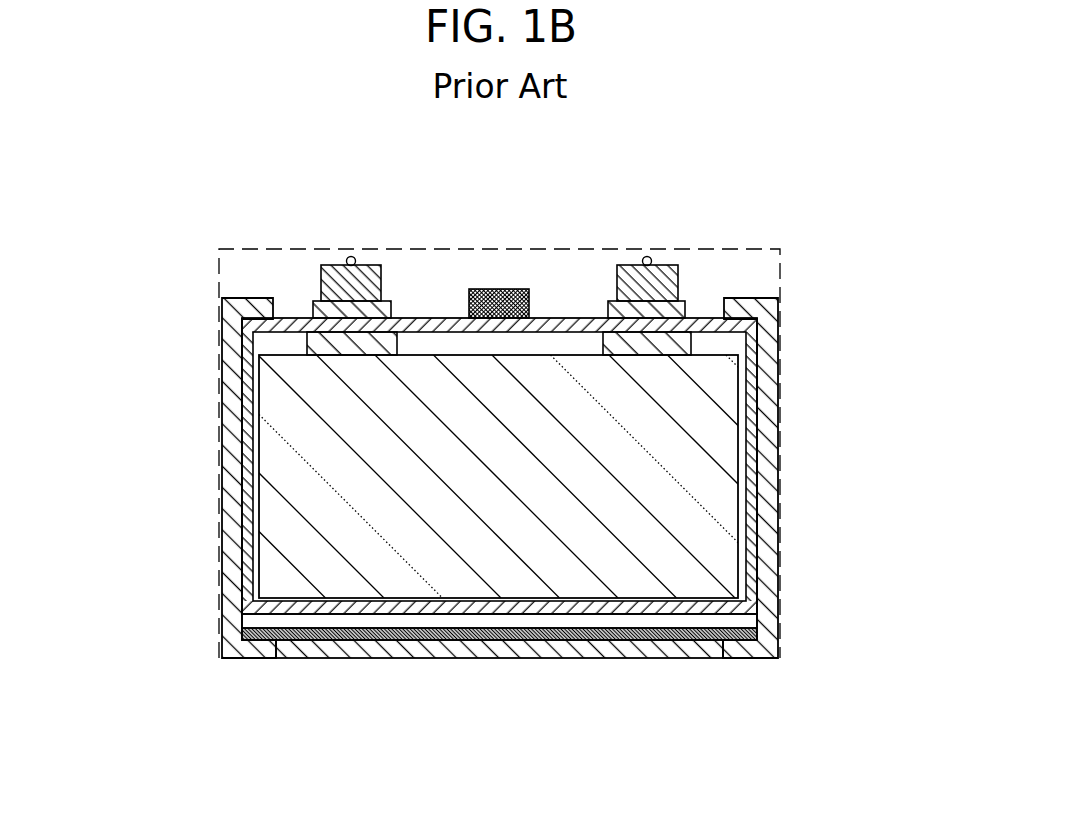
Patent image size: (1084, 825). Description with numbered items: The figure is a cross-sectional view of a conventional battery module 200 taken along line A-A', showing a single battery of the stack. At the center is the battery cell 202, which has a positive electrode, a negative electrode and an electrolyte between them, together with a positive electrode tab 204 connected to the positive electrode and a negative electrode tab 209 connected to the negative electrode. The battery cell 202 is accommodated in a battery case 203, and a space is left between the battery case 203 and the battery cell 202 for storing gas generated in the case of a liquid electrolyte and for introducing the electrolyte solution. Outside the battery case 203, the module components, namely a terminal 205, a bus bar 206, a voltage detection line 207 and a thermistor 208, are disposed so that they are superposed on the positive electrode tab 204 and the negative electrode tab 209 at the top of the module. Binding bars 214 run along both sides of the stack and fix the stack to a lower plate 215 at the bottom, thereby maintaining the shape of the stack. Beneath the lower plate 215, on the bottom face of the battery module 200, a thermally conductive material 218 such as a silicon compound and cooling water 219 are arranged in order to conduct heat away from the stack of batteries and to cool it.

The battery module 200 is at (829, 170).
The battery cell 202 is at (680, 452).
The battery case 203 is at (752, 392).
The positive electrode tab 204 is at (310, 350).
The terminal 205 is at (313, 308).
The bus bar 206 is at (321, 283).
The voltage detection line 207 is at (351, 256).
The thermistor 208 is at (496, 289).
The negative electrode tab 209 is at (691, 346).
The binding bar 214 is at (236, 503).
The lower plate 215 is at (378, 636).
The thermally conductive material 218 is at (510, 628).
The cooling water 219 is at (640, 648).